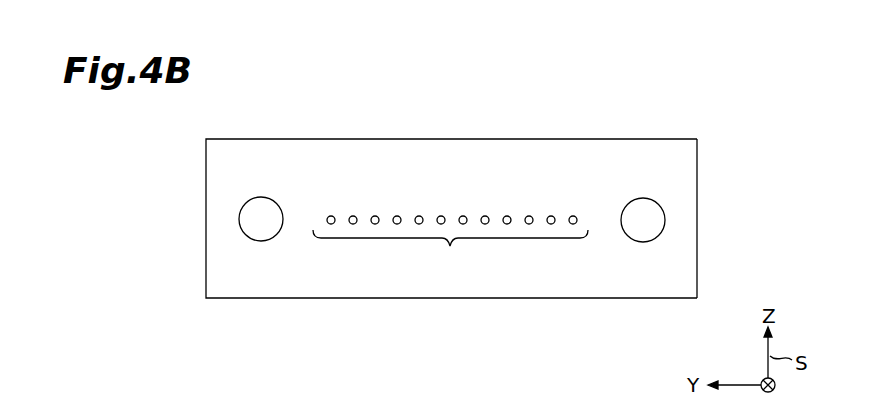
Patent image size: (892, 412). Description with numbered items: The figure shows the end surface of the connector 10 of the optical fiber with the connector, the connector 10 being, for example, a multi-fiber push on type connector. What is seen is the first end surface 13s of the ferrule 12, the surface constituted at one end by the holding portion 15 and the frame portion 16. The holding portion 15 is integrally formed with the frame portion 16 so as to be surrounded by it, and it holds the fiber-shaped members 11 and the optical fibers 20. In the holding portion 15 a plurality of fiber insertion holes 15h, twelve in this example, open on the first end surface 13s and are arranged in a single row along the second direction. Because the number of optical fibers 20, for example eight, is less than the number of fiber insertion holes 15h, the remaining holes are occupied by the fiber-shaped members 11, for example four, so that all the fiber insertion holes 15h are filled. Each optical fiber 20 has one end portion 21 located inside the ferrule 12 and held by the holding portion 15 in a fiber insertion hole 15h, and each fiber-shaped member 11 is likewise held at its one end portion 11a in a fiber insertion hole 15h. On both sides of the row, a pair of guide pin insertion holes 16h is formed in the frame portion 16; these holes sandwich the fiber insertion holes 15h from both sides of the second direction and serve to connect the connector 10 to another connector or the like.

The connector 10 is at (451, 184).
The ferrule 12 is at (237, 139).
The first end surface 13s is at (684, 174).
The holding portion 15 is at (500, 177).
The fiber insertion holes 15h is at (450, 247).
The frame portion 16 is at (528, 148).
The guide pin insertion holes 16h is at (250, 227).
The fiber-shaped member 11 is at (485, 216).
The one end portion 11a is at (454, 143).
The optical fibers 20 is at (397, 216).
The one end portion 21 is at (472, 158).